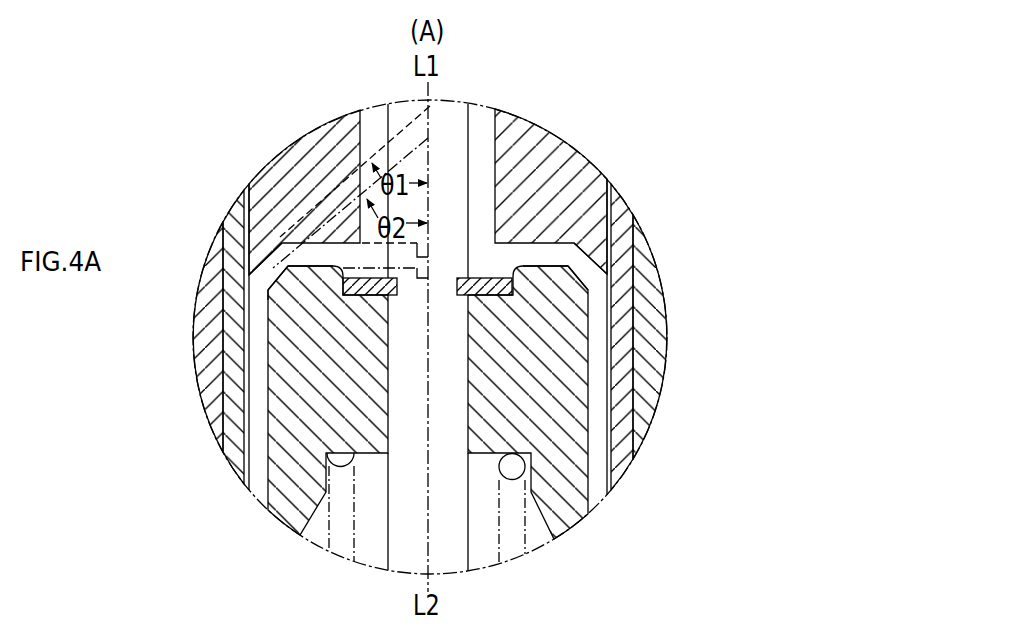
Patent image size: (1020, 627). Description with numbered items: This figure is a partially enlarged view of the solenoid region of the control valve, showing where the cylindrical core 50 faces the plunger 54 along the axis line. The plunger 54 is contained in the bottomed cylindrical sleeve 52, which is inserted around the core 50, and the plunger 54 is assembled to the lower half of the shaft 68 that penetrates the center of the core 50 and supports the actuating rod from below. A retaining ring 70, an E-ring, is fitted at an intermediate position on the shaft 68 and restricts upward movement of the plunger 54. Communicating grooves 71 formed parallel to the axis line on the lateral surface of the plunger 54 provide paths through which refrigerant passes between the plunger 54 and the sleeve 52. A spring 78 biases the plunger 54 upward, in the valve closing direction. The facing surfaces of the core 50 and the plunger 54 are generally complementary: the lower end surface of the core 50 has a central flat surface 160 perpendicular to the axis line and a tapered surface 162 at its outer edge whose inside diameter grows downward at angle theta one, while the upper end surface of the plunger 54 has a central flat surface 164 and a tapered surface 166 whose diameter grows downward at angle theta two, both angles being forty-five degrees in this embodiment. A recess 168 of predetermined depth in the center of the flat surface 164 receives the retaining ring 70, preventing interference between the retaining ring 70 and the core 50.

The core 50 is at (572, 162).
The sleeve 52 is at (228, 220).
The plunger 54 is at (577, 385).
The shaft 68 is at (453, 118).
The retaining ring 70 is at (513, 287).
The communicating grooves 71 is at (590, 430).
The spring 78 is at (525, 530).
The flat surface 160 is at (240, 318).
The tapered surface 162 is at (268, 281).
The flat surface 164 is at (578, 238).
The tapered surface 166 is at (580, 277).
The recess 168 is at (547, 223).